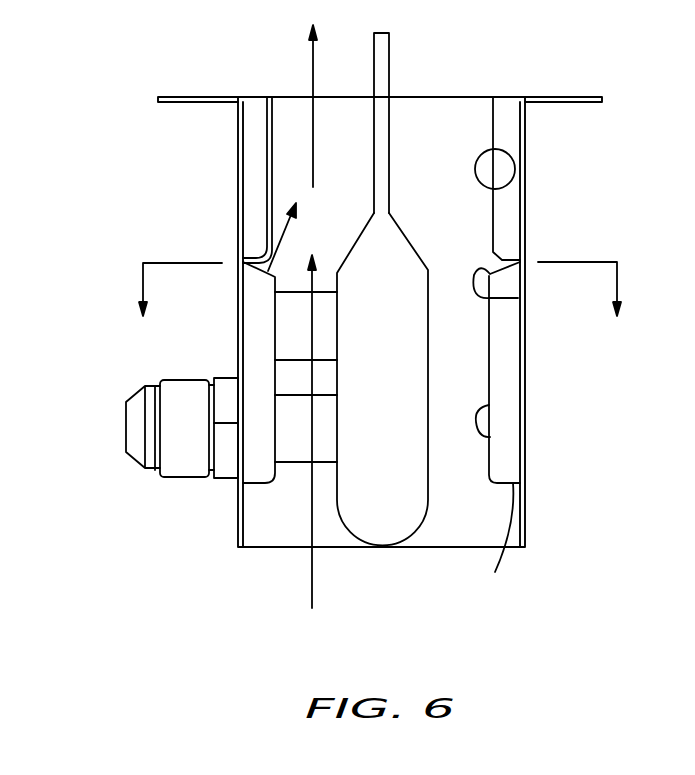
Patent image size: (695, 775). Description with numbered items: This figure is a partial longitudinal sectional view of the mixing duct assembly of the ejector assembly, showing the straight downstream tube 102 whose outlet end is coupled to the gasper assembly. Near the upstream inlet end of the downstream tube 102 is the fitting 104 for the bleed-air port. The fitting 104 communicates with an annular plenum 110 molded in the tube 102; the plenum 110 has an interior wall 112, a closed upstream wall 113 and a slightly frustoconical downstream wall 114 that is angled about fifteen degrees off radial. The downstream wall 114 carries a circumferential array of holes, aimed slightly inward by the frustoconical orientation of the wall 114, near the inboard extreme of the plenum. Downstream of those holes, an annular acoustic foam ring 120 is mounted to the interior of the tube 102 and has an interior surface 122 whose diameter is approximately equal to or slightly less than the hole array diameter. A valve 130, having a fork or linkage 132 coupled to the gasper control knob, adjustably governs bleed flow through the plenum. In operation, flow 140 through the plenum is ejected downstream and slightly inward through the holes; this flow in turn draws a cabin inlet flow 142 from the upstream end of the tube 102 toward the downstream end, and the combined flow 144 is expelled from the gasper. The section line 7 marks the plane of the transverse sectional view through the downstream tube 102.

The downstream tube 102 is at (527, 523).
The fitting 104 is at (182, 460).
The annular plenum 110 is at (512, 392).
The interior wall 112 is at (490, 437).
The closed upstream wall 113 is at (497, 548).
The downstream wall 114 is at (520, 298).
The annular acoustic foam ring 120 is at (503, 223).
The interior surface 122 is at (520, 165).
The valve 130 is at (383, 523).
The fork or linkage 132 is at (389, 72).
The flow 140 is at (285, 234).
The cabin inlet flow 142 is at (312, 585).
The combined flow 144 is at (312, 69).
The section line 7- 7 is at (381, 305).